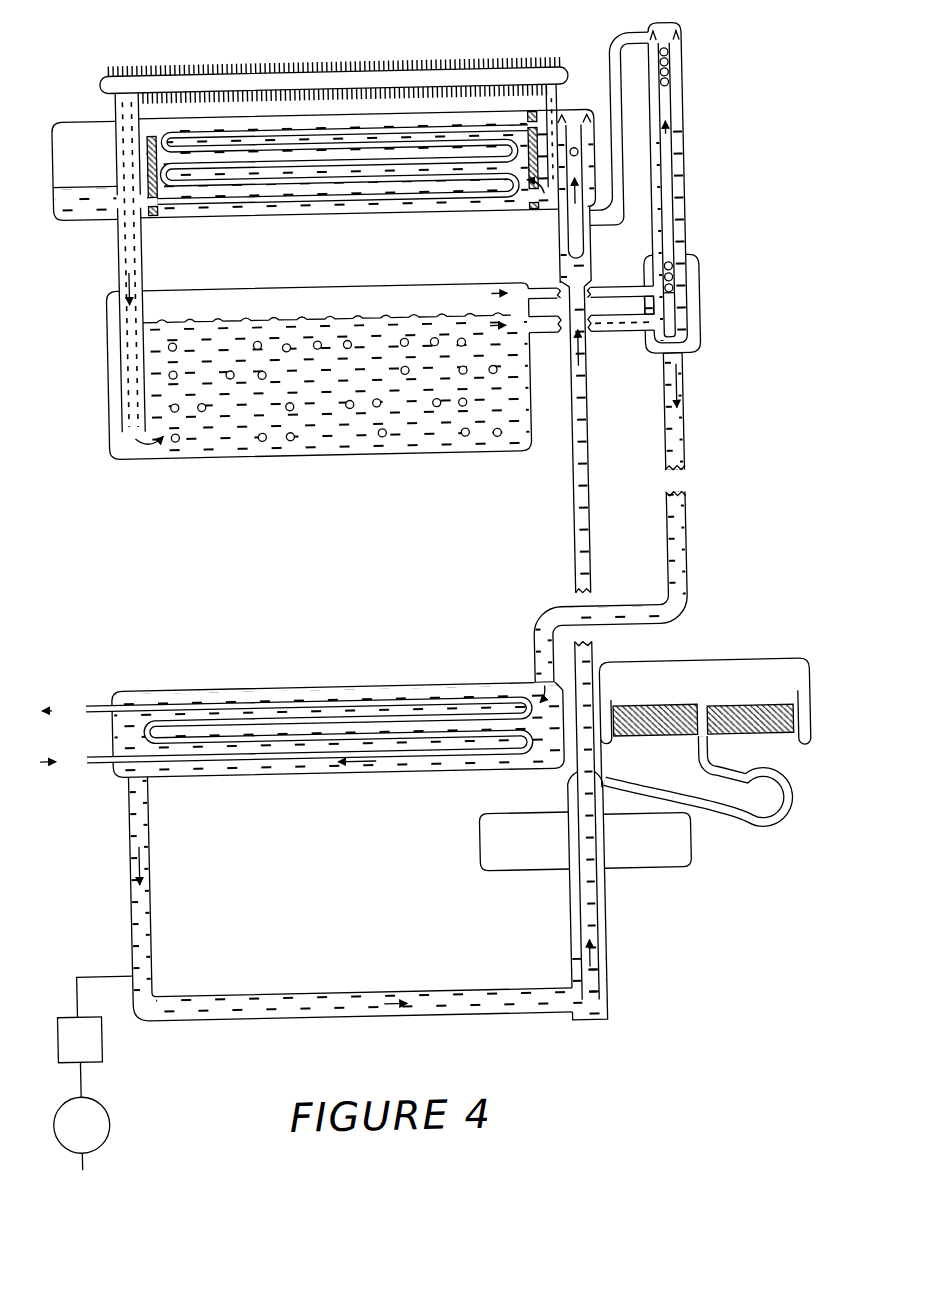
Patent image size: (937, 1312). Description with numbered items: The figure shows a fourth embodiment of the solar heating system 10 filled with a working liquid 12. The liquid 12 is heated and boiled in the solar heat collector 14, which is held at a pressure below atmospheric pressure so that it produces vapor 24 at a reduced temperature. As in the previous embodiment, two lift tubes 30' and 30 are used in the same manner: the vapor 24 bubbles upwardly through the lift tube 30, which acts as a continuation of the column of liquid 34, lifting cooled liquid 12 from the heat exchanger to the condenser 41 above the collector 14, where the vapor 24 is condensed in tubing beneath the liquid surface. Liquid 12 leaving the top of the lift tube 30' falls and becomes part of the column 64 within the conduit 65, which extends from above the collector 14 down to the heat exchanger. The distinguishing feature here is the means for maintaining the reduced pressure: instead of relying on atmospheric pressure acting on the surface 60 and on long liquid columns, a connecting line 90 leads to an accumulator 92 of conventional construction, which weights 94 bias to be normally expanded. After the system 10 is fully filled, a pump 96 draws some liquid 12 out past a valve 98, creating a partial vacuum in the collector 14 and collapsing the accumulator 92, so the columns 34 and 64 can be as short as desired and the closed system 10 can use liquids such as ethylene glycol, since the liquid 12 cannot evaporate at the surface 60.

The solar heating system 10 is at (99, 68).
The condenser 41 is at (76, 113).
The vapor 24 is at (361, 257).
The working liquid 12 is at (351, 382).
The solar heat collector 14 is at (112, 364).
The lift tube 30 is at (551, 198).
The lift tube 30' is at (663, 181).
The column of liquid 34 is at (581, 428).
The conduit 65 is at (688, 443).
The column of liquid 64 is at (683, 520).
The accumulator 92 is at (706, 664).
The weights 94 is at (676, 740).
The connecting line 90 is at (757, 839).
The surface 60 is at (599, 970).
The valve 98 is at (92, 1031).
The pump 96 is at (98, 1114).